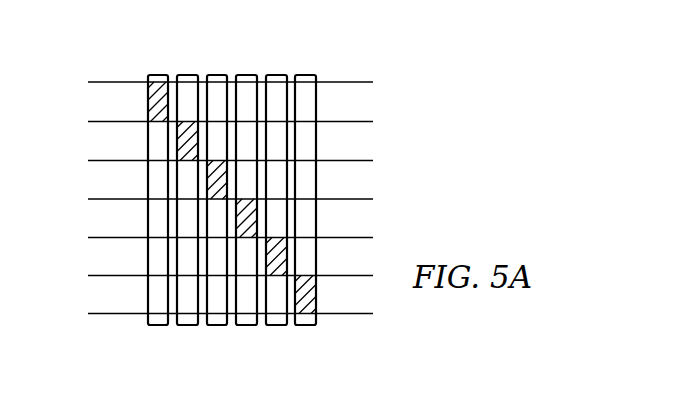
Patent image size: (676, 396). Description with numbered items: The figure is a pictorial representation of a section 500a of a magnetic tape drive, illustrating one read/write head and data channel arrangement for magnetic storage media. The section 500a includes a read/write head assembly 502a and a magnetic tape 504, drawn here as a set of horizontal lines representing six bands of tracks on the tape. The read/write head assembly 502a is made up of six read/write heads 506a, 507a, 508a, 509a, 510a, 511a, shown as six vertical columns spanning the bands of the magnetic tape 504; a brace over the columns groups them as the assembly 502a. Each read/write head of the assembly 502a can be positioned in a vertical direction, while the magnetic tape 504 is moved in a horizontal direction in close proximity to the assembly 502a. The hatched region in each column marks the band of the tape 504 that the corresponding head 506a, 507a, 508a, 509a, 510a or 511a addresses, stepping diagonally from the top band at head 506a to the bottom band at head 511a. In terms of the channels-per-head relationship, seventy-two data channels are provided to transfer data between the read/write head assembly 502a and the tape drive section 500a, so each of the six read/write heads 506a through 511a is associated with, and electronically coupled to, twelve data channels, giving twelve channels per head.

The section of a magnetic tape drive 500a is at (421, 129).
The read/write head assembly 502a is at (317, 67).
The magnetic tape 504 is at (342, 82).
The read/write head 506a is at (155, 107).
The read/write head 507a is at (181, 133).
The read/write head 508a is at (213, 167).
The read/write head 509a is at (250, 208).
The read/write head 510a is at (279, 248).
The read/write head 511a is at (307, 287).